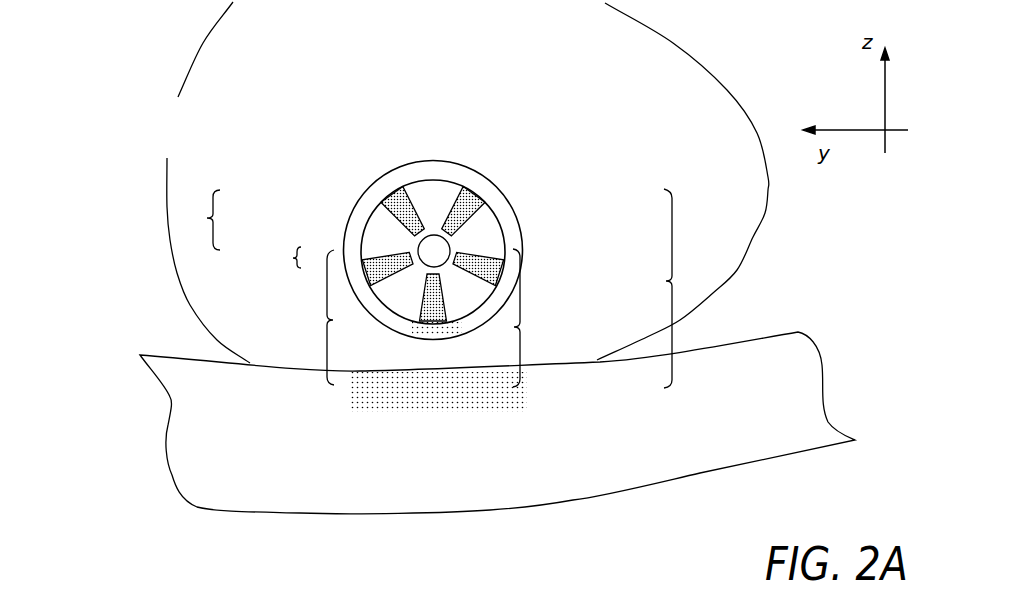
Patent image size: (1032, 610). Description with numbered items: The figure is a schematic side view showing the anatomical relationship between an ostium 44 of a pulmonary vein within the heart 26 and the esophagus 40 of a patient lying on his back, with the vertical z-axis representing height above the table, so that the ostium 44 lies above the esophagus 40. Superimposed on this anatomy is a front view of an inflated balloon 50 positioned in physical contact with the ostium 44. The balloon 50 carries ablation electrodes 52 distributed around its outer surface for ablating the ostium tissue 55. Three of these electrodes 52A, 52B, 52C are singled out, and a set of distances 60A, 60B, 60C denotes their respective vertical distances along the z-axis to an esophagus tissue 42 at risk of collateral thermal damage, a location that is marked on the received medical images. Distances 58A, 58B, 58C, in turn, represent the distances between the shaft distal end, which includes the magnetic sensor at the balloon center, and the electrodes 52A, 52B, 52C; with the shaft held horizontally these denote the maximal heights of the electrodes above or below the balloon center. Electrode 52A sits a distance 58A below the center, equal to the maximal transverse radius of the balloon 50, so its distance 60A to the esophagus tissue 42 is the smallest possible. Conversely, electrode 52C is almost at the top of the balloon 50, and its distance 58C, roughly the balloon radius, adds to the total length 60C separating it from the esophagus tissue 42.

The heart 26 is at (210, 144).
The esophagus 40 is at (328, 493).
The esophagus tissue at risk 42 is at (455, 417).
The ostium 44 is at (462, 161).
The balloon 50 is at (497, 227).
The ablation electrodes 52 is at (388, 185).
The electrode 52A is at (420, 297).
The electrode 52B is at (512, 267).
The electrode 52C is at (495, 187).
The ostium tissue 55 is at (447, 337).
The distance 58A is at (327, 287).
The distance 58B is at (293, 257).
The distance 58C is at (207, 218).
The distance 60A is at (327, 353).
The distance 60B is at (520, 327).
The distance 60C is at (672, 281).